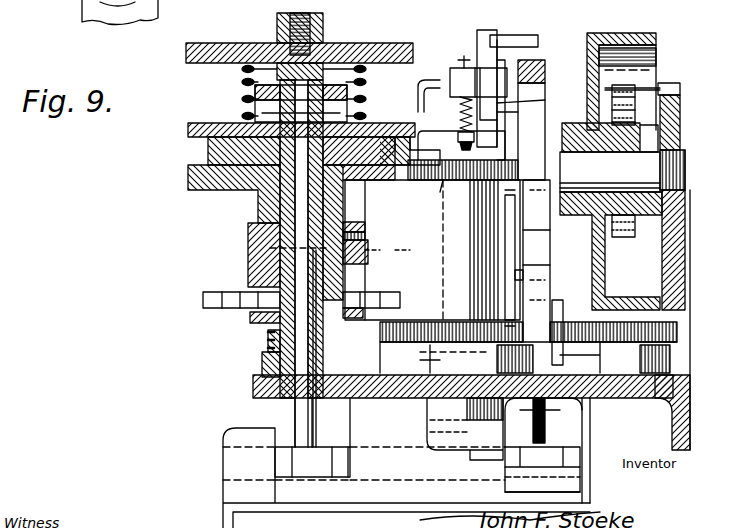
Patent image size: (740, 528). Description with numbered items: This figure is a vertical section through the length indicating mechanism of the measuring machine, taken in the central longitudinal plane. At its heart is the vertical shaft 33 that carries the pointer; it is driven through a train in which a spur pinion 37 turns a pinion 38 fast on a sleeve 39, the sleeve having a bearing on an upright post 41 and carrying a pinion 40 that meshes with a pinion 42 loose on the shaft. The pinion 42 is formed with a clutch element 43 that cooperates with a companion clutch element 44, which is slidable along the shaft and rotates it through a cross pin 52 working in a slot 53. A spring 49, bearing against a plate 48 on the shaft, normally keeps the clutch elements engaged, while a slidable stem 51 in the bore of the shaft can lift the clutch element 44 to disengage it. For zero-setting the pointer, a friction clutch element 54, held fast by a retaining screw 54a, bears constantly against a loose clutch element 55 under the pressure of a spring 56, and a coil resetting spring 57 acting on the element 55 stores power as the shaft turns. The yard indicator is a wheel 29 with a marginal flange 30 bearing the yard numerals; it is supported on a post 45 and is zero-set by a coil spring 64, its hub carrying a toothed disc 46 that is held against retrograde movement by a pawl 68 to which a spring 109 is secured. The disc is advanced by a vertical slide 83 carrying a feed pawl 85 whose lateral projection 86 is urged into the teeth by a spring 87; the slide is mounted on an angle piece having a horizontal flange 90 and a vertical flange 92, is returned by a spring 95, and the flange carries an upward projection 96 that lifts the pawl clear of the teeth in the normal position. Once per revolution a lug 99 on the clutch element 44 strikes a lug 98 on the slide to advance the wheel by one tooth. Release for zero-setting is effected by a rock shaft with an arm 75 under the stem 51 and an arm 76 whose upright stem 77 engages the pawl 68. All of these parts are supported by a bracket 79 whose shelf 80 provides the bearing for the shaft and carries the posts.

The wheel 29 is at (588, 60).
The marginal flange 30 is at (650, 25).
The vertical shaft 33 is at (350, 204).
The spur pinion 37 is at (598, 325).
The pinion 38 is at (432, 251).
The sleeve 39 is at (392, 253).
The pinion 40 is at (482, 258).
The upright post 41 is at (478, 240).
The pinion 42 is at (188, 185).
The clutch element 43 is at (208, 155).
The clutch element 44 is at (233, 126).
The post 45 is at (655, 166).
The disc 46 is at (547, 67).
The plate 48 is at (402, 36).
The spring 49 is at (243, 72).
The slidable stem 51 is at (290, 407).
The cross pin 52 is at (348, 106).
The slot 53 is at (320, 60).
The friction clutch element 54 is at (368, 248).
The retaining screw 54a is at (366, 225).
The clutch element 55 is at (368, 274).
The spring 56 is at (268, 354).
The coil resetting spring 57 is at (206, 309).
The coil spring 64 is at (632, 181).
The pawl 68 is at (547, 245).
The horizontal arm 75 is at (335, 460).
The horizontal arm 76 is at (555, 455).
The upright stem 77 is at (585, 405).
The bracket 79 is at (672, 428).
The shelf 80 is at (390, 398).
The slide 83 is at (545, 108).
The feed pawl 85 is at (480, 40).
The lateral projection 86 is at (512, 40).
The spring 87 is at (458, 107).
The horizontal flange 90 is at (465, 145).
The vertical flange 92 is at (517, 115).
The spring 95 is at (431, 198).
The upward projection 96 is at (422, 146).
The lug 98 is at (462, 62).
The lug 99 is at (425, 80).
The spring 109 is at (550, 264).